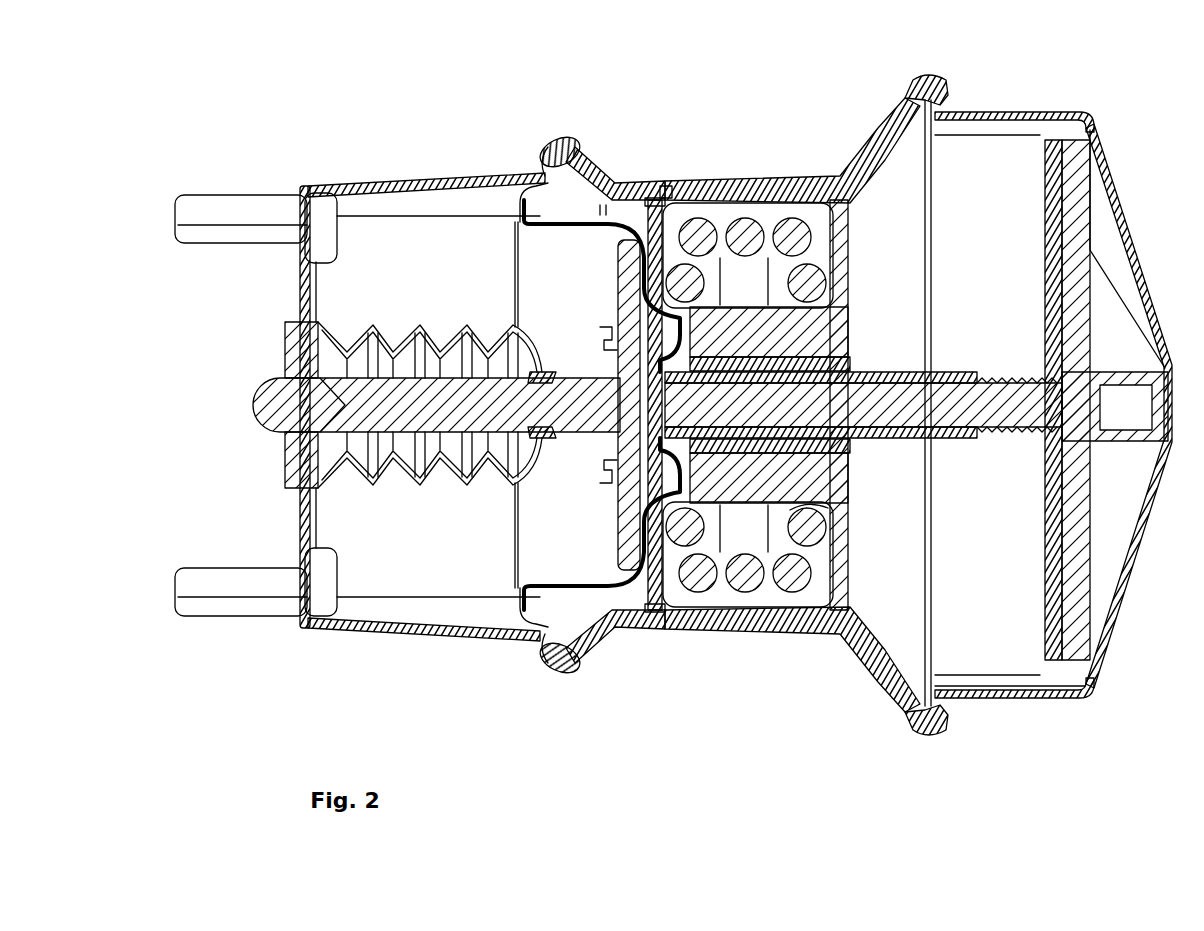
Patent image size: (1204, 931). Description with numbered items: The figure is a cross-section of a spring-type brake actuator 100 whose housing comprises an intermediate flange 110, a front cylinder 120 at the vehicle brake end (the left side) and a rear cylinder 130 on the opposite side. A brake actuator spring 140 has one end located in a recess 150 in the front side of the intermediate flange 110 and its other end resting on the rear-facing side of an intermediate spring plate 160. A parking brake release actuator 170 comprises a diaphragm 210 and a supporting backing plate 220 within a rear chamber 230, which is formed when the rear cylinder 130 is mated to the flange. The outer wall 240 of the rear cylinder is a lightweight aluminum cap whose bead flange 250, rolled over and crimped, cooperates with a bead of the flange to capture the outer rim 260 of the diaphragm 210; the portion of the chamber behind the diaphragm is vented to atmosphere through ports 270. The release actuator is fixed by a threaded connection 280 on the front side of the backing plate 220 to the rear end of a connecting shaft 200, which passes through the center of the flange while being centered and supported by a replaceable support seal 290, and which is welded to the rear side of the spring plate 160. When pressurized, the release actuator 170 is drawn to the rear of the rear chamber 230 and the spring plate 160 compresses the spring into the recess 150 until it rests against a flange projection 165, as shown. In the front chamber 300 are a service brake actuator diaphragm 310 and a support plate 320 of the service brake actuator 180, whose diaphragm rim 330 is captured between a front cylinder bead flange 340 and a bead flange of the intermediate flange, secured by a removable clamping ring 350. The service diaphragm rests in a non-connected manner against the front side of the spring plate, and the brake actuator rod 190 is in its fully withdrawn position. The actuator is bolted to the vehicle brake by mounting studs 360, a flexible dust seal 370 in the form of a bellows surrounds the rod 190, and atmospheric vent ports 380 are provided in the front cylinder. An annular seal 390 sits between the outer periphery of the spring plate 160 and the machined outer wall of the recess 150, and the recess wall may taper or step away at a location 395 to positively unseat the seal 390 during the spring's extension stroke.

The spring brake actuator 100 is at (681, 69).
The intermediate flange 110 is at (772, 636).
The front cylinder 120 is at (422, 433).
The rear cylinder 130 is at (955, 714).
The brake actuator spring 140 is at (698, 594).
The recess 150 is at (777, 399).
The intermediate spring plate 160 is at (648, 600).
The flange projection 165 is at (830, 496).
The parking brake release actuator 170 is at (1062, 302).
The service brake actuator 180 is at (617, 293).
The brake actuator rod 190 is at (258, 380).
The connecting shaft 200 is at (880, 440).
The diaphragm 210 is at (1000, 686).
The backing plate 220 is at (1050, 555).
The rear chamber 230 is at (962, 322).
The outer wall 240 is at (1136, 610).
The bead flange 250 is at (935, 78).
The outer rim 260 is at (933, 122).
The ports 270 is at (1035, 112).
The threaded connection 280 is at (1000, 433).
The support seal 290 is at (845, 366).
The front chamber 300 is at (628, 195).
The service brake actuator diaphragm 310 is at (548, 588).
The support plate 320 is at (618, 497).
The diaphragm rim 330 is at (563, 142).
The front cylinder bead flange 340 is at (527, 185).
The removable clamping ring 350 is at (548, 670).
The mounting studs 360 is at (212, 238).
The flexible dust seal 370 is at (395, 478).
The atmospheric vent ports 380 is at (455, 626).
The annular seal 390 is at (670, 188).
The location 395 is at (605, 207).